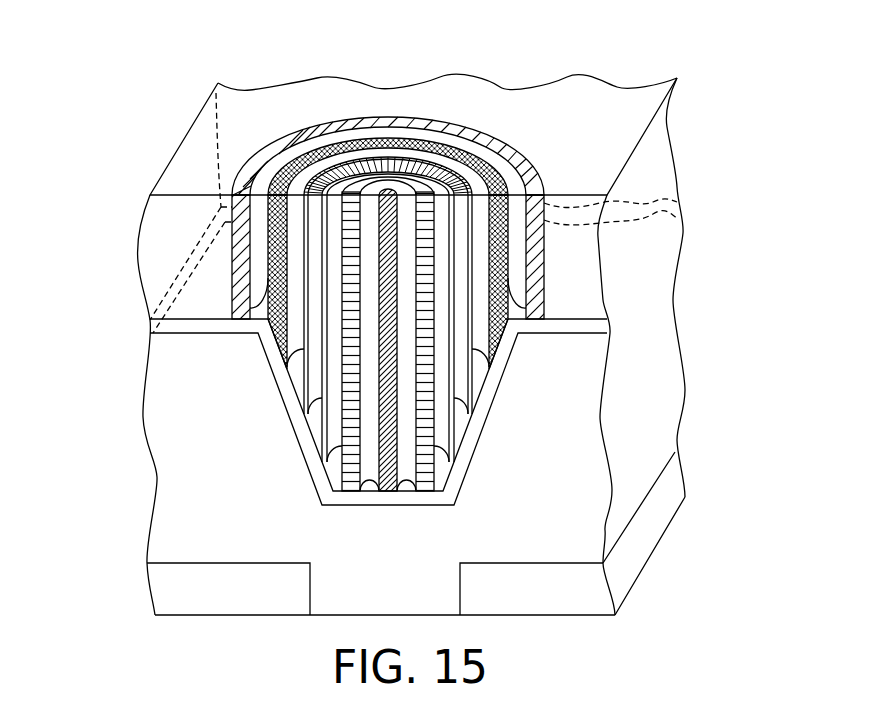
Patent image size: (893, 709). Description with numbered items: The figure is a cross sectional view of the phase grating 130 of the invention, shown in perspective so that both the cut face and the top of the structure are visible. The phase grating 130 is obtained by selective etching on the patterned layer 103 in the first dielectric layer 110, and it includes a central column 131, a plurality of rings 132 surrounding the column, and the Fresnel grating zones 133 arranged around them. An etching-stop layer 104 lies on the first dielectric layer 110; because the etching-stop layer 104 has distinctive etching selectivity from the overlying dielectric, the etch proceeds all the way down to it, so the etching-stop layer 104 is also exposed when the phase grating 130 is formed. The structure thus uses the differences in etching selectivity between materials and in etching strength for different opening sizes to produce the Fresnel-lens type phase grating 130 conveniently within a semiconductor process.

The patterned layer 103 is at (508, 605).
The etching-stop layer 104 is at (598, 327).
The first dielectric layer 110 is at (508, 543).
The phase grating 130 is at (200, 178).
The column 131 is at (389, 189).
The rings 132 is at (316, 262).
The Fresnel grating zones 133 is at (407, 226).